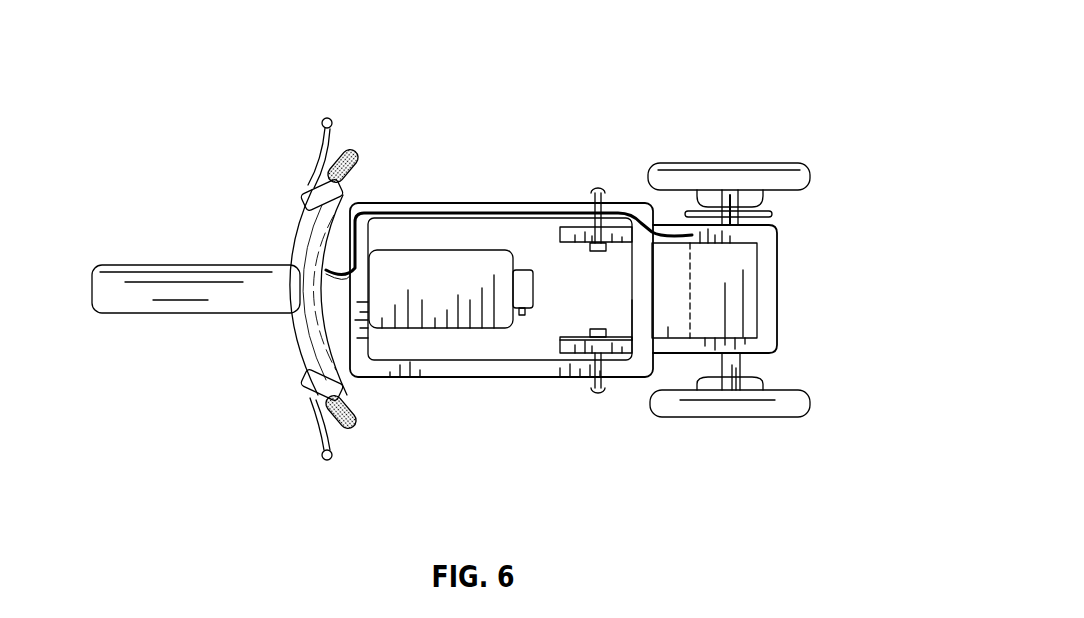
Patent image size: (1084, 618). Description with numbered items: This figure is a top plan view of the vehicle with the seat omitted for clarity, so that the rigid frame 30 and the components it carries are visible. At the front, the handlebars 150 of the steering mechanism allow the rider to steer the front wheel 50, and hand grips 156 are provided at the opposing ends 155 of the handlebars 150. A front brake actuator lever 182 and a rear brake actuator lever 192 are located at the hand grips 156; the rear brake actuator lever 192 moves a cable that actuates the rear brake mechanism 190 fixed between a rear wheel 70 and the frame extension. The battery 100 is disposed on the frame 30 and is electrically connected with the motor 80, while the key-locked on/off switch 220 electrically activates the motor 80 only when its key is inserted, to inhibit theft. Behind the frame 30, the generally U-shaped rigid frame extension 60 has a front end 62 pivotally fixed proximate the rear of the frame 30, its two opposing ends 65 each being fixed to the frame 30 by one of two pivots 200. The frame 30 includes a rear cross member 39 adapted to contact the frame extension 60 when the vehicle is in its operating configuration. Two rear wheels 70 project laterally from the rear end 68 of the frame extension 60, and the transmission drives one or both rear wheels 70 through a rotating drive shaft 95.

The frame 30 is at (594, 153).
The rear cross member 39 is at (640, 332).
The front wheel 50 is at (138, 273).
The frame extension 60 is at (700, 353).
The front end of frame extension 62 is at (570, 353).
The opposing ends of frame extension 65 is at (553, 225).
The rear end of frame extension 68 is at (777, 280).
The rear wheels 70 is at (800, 175).
The motor 80 is at (706, 330).
The drive shaft 95 is at (762, 197).
The battery 100 is at (415, 260).
The handlebars 150 is at (294, 256).
The opposing ends of handlebars 155 is at (358, 148).
The hand grips 156 is at (352, 148).
The front brake actuator lever 182 is at (322, 412).
The rear brake mechanism 190 is at (707, 203).
The rear brake actuator lever 192 is at (320, 172).
The pivots 200 is at (600, 252).
The on/off switch 220 is at (526, 275).